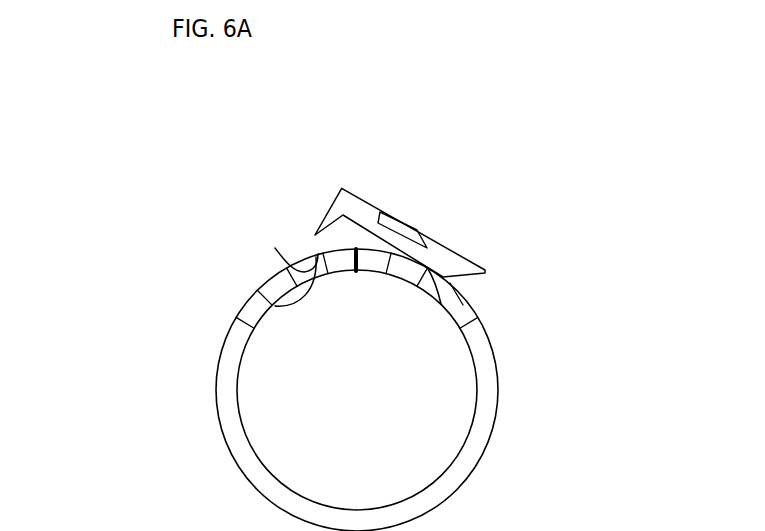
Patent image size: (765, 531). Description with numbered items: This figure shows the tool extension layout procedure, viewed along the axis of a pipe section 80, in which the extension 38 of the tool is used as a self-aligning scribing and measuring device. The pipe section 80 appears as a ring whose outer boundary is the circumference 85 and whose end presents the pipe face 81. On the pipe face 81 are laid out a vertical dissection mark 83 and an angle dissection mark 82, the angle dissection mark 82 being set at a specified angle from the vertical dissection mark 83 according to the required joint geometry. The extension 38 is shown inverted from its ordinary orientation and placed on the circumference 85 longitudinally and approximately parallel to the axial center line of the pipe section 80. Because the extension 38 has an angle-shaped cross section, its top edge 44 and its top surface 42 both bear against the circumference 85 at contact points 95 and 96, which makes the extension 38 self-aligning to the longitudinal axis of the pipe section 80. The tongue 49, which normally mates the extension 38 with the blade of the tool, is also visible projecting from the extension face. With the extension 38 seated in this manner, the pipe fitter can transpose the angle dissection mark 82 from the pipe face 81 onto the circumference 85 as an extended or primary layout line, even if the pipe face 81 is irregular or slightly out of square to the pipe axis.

The extension 38 is at (402, 165).
The top surface 42 is at (373, 228).
The top edge 44 is at (318, 250).
The tongue 49 is at (428, 232).
The pipe section 80 is at (540, 375).
The pipe face 81 is at (235, 438).
The angle dissection mark 82 is at (275, 306).
The vertical dissection mark 83 is at (360, 270).
The circumference 85 is at (215, 363).
The contact point 95 is at (275, 248).
The contact point 96 is at (447, 302).